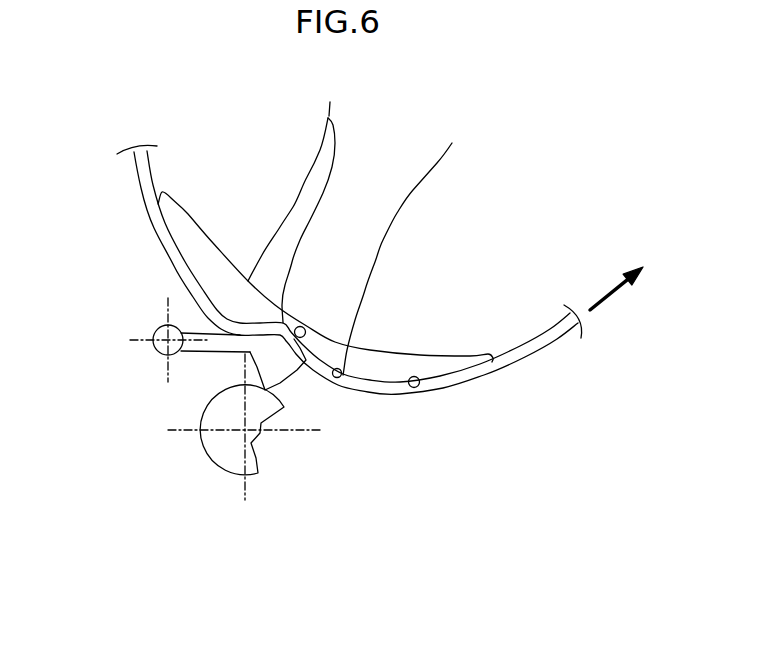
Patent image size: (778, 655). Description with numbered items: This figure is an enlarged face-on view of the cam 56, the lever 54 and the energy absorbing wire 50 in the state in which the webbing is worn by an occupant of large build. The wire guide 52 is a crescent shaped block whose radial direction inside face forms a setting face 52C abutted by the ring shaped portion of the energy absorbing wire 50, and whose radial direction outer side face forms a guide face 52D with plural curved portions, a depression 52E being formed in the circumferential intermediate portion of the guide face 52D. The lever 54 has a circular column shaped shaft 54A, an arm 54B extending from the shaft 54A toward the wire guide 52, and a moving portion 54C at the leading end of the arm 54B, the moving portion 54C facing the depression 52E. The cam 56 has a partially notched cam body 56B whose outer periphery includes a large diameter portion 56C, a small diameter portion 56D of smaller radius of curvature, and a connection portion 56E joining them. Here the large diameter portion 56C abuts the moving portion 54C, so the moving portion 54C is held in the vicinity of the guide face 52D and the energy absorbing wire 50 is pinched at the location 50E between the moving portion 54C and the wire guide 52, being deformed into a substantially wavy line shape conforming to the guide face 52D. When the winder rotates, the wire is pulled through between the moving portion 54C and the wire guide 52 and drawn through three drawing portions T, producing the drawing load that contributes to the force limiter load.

The energy absorbing wire 50 is at (527, 362).
The location pinched between the wire guide and the lever 50E is at (304, 361).
The wire guide 52 is at (214, 246).
The setting face 52C is at (368, 343).
The guide face 52D is at (425, 381).
The depression 52E is at (304, 327).
The lever 54 is at (223, 396).
The shaft 54A is at (154, 331).
The arm 54B is at (212, 352).
The moving portion 54C is at (304, 366).
The cam 56 is at (233, 476).
The cam body 56B is at (215, 471).
The large diameter portion 56C is at (205, 455).
The small diameter portion 56D is at (263, 447).
The connection portion 56E is at (262, 463).
The drawing portions T is at (391, 227).